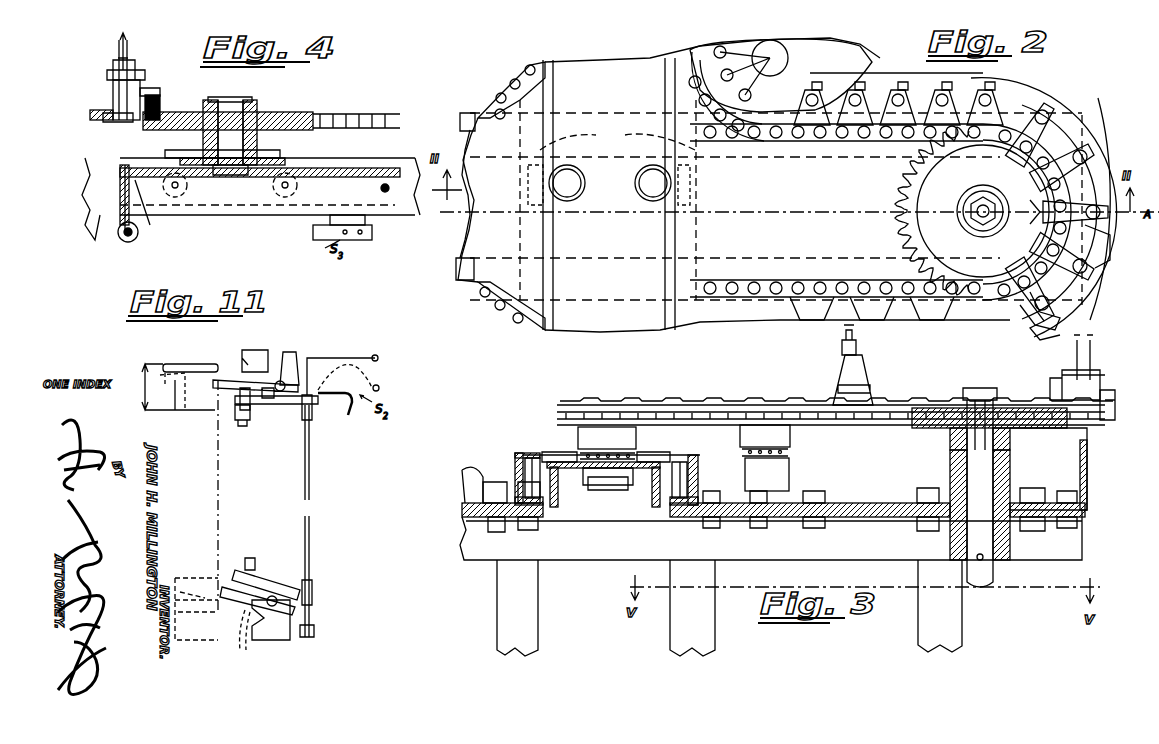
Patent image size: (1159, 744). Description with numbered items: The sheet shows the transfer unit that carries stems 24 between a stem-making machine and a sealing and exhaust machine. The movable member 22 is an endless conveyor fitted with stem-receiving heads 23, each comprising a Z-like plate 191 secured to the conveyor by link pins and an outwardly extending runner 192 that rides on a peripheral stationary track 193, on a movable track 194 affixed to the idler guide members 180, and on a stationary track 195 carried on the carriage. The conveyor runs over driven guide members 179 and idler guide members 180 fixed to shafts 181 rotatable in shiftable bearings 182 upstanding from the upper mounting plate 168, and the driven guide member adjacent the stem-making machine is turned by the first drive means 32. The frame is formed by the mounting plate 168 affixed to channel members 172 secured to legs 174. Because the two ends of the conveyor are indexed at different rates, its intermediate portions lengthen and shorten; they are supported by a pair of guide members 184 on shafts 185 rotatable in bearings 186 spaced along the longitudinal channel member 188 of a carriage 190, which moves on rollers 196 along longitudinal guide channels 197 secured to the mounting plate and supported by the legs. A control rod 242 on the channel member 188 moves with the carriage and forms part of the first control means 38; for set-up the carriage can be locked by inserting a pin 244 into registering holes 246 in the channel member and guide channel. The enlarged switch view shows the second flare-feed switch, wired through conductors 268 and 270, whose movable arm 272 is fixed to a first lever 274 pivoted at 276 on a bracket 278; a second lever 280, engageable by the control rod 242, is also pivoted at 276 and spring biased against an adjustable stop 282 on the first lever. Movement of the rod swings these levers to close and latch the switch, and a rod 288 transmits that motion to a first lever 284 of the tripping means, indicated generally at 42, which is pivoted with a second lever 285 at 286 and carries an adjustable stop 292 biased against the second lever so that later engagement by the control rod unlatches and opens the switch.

In FIG. 2, the movable member 22 is at (543, 62).
In FIG. 3, the movable member 22 is at (717, 404).
In FIG. 4, the movable member 22 is at (346, 113).
In FIG. 2, the stem-receiving head 23 is at (1100, 130).
In FIG. 3, the stem-receiving head 23 is at (835, 380).
In FIG. 4, the stem-receiving head 23 is at (148, 92).
In FIG. 3, the stem 24 is at (858, 350).
In FIG. 4, the stem 24 is at (128, 62).
In FIG. 2, the first drive means 32 is at (888, 203).
In FIG. 11, the first control means 38 is at (310, 348).
In FIG. 11, the lower index mechanism 42 is at (272, 553).
In FIG. 2, the upper mounting plate 168 is at (480, 227).
In FIG. 3, the upper mounting plate 168 is at (462, 508).
In FIG. 2, the channel member 172 is at (478, 118).
In FIG. 3, the channel member 172 is at (475, 540).
In FIG. 3, the leg 174 is at (510, 622).
In FIG. 2, the driven guide member 179 is at (918, 186).
In FIG. 3, the driven guide member 179 is at (938, 408).
In FIG. 2, the idler guide member 180 is at (510, 78).
In FIG. 3, the idler guide member 180 is at (790, 436).
In FIG. 2, the shaft 181 is at (772, 42).
In FIG. 3, the shaft 181 is at (1008, 468).
In FIG. 3, the shiftable bearing 182 is at (792, 470).
In FIG. 3, the guide member 184 is at (590, 434).
In FIG. 4, the guide member 184 is at (278, 112).
In FIG. 4, the shaft 185 is at (232, 99).
In FIG. 3, the bearing 186 is at (604, 450).
In FIG. 4, the bearing 186 is at (258, 160).
In FIG. 2, the longitudinal channel member 188 is at (598, 322).
In FIG. 3, the longitudinal channel member 188 is at (575, 505).
In FIG. 4, the longitudinal channel member 188 is at (348, 170).
In FIG. 2, the carriage 190 is at (601, 62).
In FIG. 3, the carriage 190 is at (648, 500).
In FIG. 2, the Z-like plate 191 is at (1080, 300).
In FIG. 3, the Z-like plate 191 is at (860, 383).
In FIG. 4, the Z-like plate 191 is at (138, 78).
In FIG. 2, the runner 192 is at (1112, 250).
In FIG. 3, the runner 192 is at (1108, 402).
In FIG. 4, the runner 192 is at (110, 98).
In FIG. 2, the peripheral stationary track 193 is at (1012, 90).
In FIG. 3, the peripheral stationary track 193 is at (1086, 432).
In FIG. 2, the movable track 194 is at (850, 55).
In FIG. 4, the stationary track 195 is at (95, 114).
In FIG. 2, the roller 196 is at (650, 170).
In FIG. 3, the roller 196 is at (520, 475).
In FIG. 4, the roller 196 is at (270, 195).
In FIG. 2, the longitudinal guide channel 197 is at (680, 218).
In FIG. 3, the longitudinal guide channel 197 is at (517, 455).
In FIG. 4, the longitudinal guide channel 197 is at (90, 192).
In FIG. 4, the control rod 242 is at (138, 238).
In FIG. 11, the control rod 242 is at (188, 375).
In FIG. 4, the pin 244 is at (380, 189).
In FIG. 4, the registering holes 246 is at (385, 195).
In FIG. 11, the conductor 268 is at (370, 356).
In FIG. 11, the conductor 270 is at (376, 386).
In FIG. 11, the movable arm 272 is at (352, 412).
In FIG. 11, the first lever 274 is at (288, 405).
In FIG. 11, the pivot 276 is at (286, 372).
In FIG. 11, the bracket 278 is at (258, 350).
In FIG. 11, the second lever 280 is at (205, 368).
In FIG. 11, the adjustable stop 282 is at (235, 422).
In FIG. 11, the first lever 284 is at (235, 578).
In FIG. 11, the second lever 285 is at (248, 640).
In FIG. 11, the pivot 286 is at (292, 622).
In FIG. 11, the rod 288 is at (312, 500).
In FIG. 11, the adjustable stop 292 is at (250, 566).